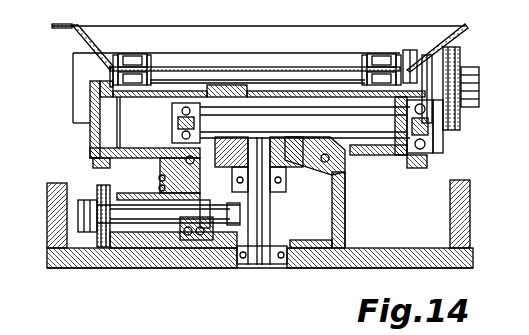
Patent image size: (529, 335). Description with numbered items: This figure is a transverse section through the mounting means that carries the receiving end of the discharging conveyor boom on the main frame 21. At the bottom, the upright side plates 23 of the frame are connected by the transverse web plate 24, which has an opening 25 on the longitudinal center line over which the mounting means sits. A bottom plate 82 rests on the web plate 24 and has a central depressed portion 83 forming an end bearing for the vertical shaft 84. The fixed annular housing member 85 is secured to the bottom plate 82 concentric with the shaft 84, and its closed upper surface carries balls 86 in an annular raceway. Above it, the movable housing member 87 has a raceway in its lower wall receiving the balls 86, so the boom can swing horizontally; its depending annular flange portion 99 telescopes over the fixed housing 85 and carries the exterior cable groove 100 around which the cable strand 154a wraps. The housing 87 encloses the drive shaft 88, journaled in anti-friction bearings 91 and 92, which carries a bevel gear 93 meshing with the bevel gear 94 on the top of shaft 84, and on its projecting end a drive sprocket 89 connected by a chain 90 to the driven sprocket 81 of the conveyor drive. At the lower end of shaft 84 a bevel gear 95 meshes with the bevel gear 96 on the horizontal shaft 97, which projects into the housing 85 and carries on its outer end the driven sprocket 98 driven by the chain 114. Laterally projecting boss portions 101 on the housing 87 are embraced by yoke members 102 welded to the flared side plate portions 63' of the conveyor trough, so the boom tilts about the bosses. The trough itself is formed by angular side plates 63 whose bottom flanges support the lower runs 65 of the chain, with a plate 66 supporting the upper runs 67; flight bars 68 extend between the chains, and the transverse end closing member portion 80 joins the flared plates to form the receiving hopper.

The frame 21 is at (283, 276).
The side plates 23 is at (47, 235).
The web plate 24 is at (405, 265).
The opening 25 is at (213, 262).
The angular side plates 63 is at (260, 41).
The outwardly flared side plate portions 63' is at (103, 43).
The lower runs 65 is at (360, 58).
The plate 66 is at (180, 62).
The upper runs 67 is at (138, 56).
The flight bars 68 is at (222, 62).
The transverse end closing member portion 80 is at (280, 26).
The driven sprocket 81 is at (460, 58).
The bottom plate 82 is at (302, 260).
The central depressed portion 83 is at (268, 253).
The vertical shaft 84 is at (270, 220).
The annular housing member 85 is at (345, 206).
The balls 86 is at (163, 149).
The housing member 87 is at (390, 160).
The drive shaft 88 is at (305, 122).
The drive sprocket 89 is at (460, 148).
The chain 90 is at (453, 84).
The anti-friction bearing 91 is at (423, 150).
The anti-friction bearing 92 is at (172, 106).
The bevel gear 93 is at (233, 98).
The bevel gear 94 is at (268, 166).
The bevel gear 95 is at (217, 257).
The bevel gear 96 is at (173, 262).
The horizontal shaft 97 is at (145, 233).
The driven sprocket 98 is at (93, 247).
The depending annular flange portion 99 is at (333, 201).
The cable groove 100 is at (160, 163).
The boss portions 101 is at (90, 152).
The yoke members 102 is at (90, 86).
The chain 114 is at (107, 245).
The cable strand 154a is at (393, 208).